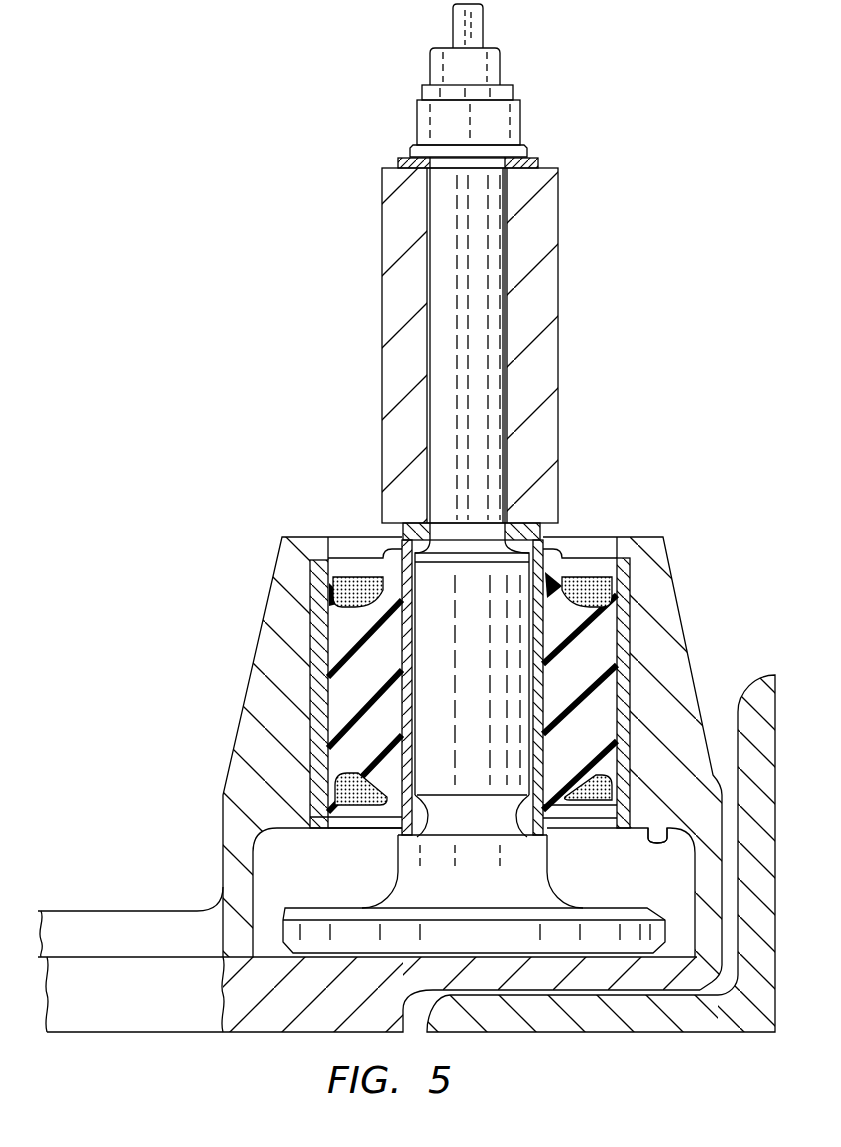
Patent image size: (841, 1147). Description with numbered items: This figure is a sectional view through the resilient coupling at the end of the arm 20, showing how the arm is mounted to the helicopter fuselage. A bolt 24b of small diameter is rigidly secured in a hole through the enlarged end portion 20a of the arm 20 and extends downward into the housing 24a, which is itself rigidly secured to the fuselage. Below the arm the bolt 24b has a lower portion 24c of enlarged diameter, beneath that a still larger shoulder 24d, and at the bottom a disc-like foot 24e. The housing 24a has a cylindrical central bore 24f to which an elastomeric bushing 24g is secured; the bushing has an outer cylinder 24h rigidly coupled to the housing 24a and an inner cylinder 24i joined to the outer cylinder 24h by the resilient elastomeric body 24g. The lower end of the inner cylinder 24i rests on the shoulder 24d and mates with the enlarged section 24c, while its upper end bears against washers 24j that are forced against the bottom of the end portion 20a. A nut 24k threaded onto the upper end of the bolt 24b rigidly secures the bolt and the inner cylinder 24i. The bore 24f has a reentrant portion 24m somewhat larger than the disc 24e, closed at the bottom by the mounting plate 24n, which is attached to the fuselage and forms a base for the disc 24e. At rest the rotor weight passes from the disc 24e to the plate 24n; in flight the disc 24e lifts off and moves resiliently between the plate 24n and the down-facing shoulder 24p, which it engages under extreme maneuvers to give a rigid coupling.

The arm 20 is at (528, 230).
The end of arm 20a is at (542, 382).
The housing 24a is at (265, 683).
The bolt 24b is at (452, 66).
The lower portion of enlarged diameter 24c is at (490, 701).
The shoulder 24d is at (505, 840).
The disc-like foot 24e is at (601, 932).
The central bore 24f is at (340, 540).
The elastomeric bushing 24g is at (472, 692).
The outer cylinder 24h is at (310, 622).
The inner cylinder 24i is at (411, 622).
The washers 24j is at (522, 522).
The nut 24k is at (482, 128).
The reentrant portion 24m is at (262, 866).
The mounting plate 24n is at (320, 1012).
The shoulder 24p is at (668, 828).